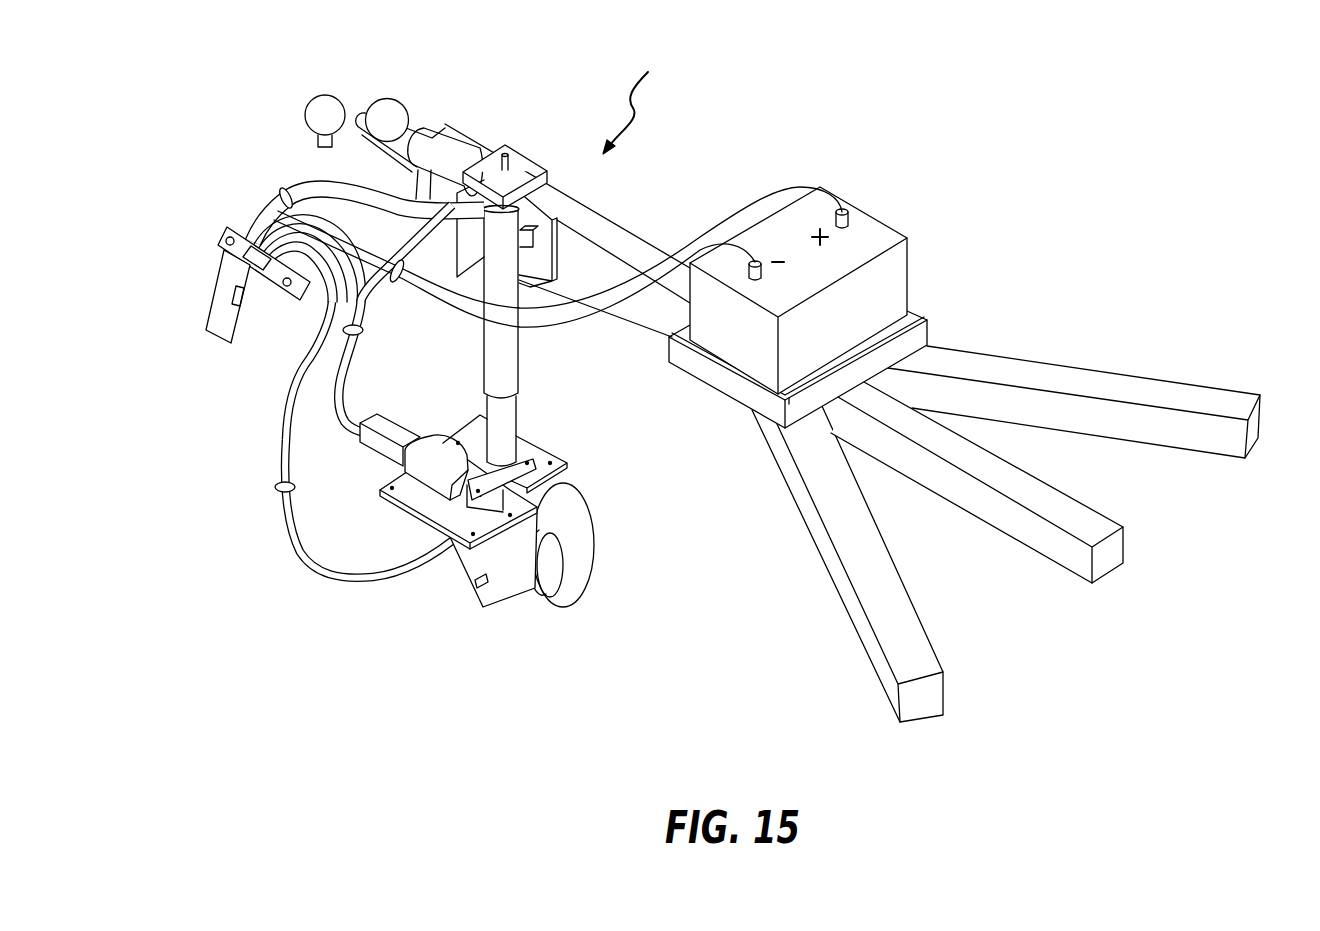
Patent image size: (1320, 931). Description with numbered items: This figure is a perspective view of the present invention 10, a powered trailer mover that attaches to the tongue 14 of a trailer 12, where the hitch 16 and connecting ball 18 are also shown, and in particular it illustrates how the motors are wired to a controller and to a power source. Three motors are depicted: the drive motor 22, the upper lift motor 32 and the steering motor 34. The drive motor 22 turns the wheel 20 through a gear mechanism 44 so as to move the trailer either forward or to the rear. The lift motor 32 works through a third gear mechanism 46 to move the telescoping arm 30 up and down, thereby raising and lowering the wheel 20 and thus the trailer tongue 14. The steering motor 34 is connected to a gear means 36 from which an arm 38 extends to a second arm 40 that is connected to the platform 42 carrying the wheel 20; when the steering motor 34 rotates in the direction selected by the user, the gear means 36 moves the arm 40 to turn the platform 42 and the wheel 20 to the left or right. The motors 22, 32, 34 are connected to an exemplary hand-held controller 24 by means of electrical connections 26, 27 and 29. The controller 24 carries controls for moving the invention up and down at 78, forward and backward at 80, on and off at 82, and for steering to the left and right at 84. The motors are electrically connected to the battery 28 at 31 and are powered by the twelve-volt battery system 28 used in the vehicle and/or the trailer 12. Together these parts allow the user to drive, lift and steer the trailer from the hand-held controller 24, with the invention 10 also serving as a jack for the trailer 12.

The present invention 10 is at (640, 98).
The trailer 12 is at (1090, 380).
The tongue 14 is at (640, 262).
The hitch 16 is at (392, 98).
The connecting ball 18 is at (305, 112).
The wheel 20 is at (573, 597).
The drive motor 22 is at (453, 567).
The hand-held controller 24 is at (217, 343).
The electrical connection 26 is at (273, 487).
The electrical connection 27 is at (362, 331).
The battery 28 is at (872, 225).
The electrical connection 29 is at (283, 188).
The arm 30 is at (507, 352).
The electrical connection to battery 31 is at (400, 262).
The upper lift motor 32 is at (433, 134).
The steering motor 34 is at (392, 430).
The gear means 36 is at (430, 480).
The arm 38 is at (440, 533).
The second arm 40 is at (553, 483).
The platform 42 is at (532, 447).
The gear mechanism 44 is at (487, 597).
The third gear mechanism 46 is at (528, 162).
The up and down control 78 is at (223, 290).
The forward and backward control 80 is at (287, 288).
The on/off control 82 is at (250, 254).
The steering control 84 is at (222, 238).